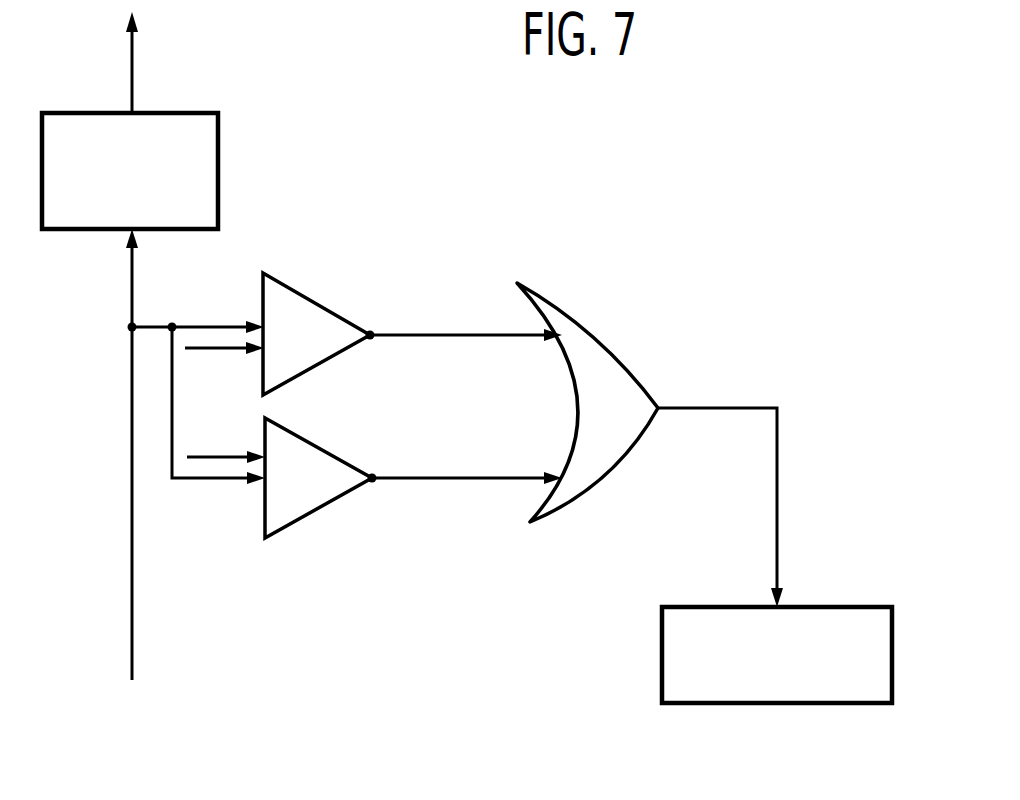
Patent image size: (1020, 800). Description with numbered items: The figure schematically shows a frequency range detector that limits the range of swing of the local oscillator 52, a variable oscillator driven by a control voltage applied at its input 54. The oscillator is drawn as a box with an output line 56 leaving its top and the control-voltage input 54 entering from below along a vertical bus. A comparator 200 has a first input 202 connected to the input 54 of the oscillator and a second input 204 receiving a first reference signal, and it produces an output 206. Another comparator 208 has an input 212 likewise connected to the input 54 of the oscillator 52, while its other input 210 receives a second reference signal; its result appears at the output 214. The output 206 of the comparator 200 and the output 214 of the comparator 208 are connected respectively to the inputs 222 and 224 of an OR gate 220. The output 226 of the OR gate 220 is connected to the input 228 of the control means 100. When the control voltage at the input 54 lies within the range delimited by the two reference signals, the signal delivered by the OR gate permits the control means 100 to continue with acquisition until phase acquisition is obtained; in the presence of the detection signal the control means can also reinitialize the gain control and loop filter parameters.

The local oscillator 52 is at (218, 160).
The input of the local oscillator 54 is at (125, 232).
The oscillator output line 56 is at (132, 110).
The control means 100 is at (865, 680).
The comparator 200 is at (327, 307).
The first input of the comparator 202 is at (220, 327).
The second input of the comparator 204 is at (222, 350).
The output of the comparator 206 is at (372, 335).
The second comparator 208 is at (346, 461).
The first input of the second comparator 210 is at (249, 424).
The input of the second comparator 212 is at (225, 480).
The output of the second comparator 214 is at (403, 480).
The OR gate 220 is at (605, 343).
The input of the OR gate 222 is at (490, 336).
The input of the OR gate 224 is at (498, 480).
The output of the OR gate 226 is at (661, 408).
The input of the control means 228 is at (777, 534).